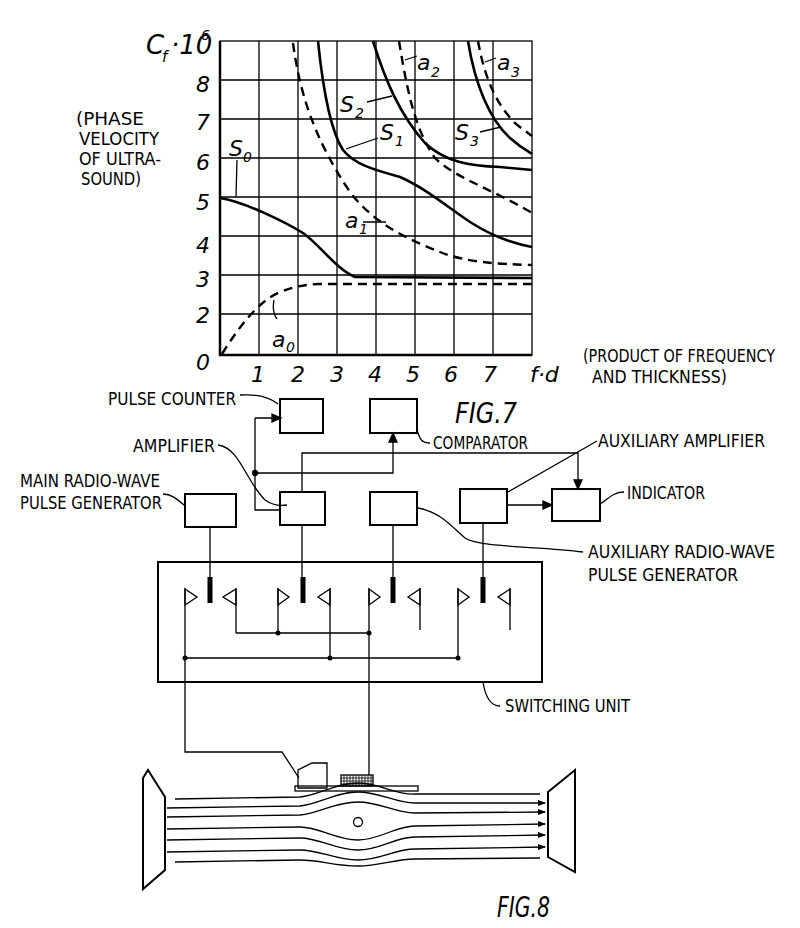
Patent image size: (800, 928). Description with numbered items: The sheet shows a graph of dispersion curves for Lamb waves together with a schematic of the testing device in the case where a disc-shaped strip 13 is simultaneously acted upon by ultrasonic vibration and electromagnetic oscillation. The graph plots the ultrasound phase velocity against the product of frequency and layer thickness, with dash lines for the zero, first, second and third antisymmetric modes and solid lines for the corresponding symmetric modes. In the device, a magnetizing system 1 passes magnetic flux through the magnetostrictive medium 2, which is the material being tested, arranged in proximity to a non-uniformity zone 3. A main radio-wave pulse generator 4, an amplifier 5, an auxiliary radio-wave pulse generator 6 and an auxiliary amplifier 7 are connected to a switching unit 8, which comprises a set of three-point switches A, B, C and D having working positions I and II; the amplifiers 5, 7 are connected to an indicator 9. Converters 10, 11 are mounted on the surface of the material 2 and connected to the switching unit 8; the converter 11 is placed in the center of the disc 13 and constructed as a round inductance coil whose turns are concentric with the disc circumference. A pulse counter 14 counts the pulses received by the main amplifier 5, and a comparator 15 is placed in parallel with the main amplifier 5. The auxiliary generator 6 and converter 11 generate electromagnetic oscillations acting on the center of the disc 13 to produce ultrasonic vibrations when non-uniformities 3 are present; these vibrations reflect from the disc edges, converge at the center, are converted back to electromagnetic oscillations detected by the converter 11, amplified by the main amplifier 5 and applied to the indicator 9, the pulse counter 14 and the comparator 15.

The magnetizing system 1 is at (560, 785).
The magnetostrictive medium 2 is at (203, 808).
The non-uniformity zone 3 is at (363, 827).
The main radio-wave pulse generator 4 is at (210, 510).
The amplifier 5 is at (302, 508).
The auxiliary radio-wave pulse generator 6 is at (393, 508).
The auxiliary amplifier 7 is at (483, 506).
The switching unit 8 is at (552, 635).
The indicator 9 is at (576, 505).
The converter 10 is at (311, 775).
The converter 11 is at (375, 777).
The strip 13 is at (416, 786).
The pulse counter 14 is at (301, 416).
The comparator 15 is at (393, 416).